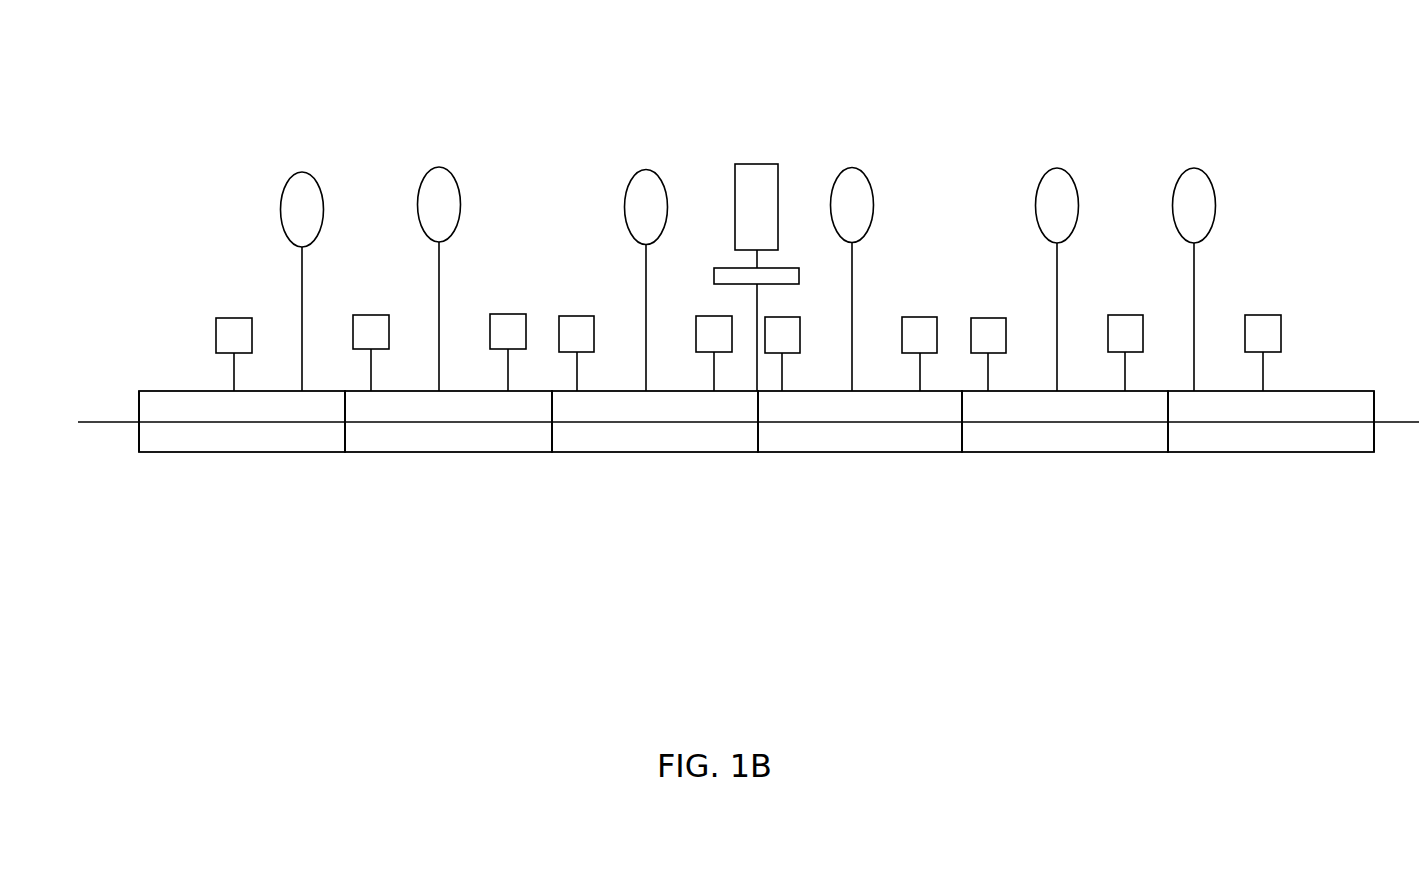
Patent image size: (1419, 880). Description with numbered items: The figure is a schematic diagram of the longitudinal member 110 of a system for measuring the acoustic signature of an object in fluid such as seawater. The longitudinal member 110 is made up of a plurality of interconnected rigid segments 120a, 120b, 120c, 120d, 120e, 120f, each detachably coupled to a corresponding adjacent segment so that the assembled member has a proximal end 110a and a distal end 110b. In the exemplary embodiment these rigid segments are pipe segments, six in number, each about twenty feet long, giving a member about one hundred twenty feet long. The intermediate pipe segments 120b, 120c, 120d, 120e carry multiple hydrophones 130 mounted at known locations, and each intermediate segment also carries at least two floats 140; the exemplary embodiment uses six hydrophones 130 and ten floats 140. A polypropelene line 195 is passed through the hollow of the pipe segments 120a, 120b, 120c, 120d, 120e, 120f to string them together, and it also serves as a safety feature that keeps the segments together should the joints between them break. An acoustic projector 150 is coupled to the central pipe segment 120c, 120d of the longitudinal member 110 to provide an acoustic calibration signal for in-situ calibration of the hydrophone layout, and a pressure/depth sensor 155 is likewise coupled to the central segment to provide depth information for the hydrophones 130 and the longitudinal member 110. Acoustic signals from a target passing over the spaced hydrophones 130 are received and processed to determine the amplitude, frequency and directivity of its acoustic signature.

The longitudinal member 110 is at (735, 484).
The proximal end 110a is at (139, 404).
The distal end 110b is at (1374, 405).
The rigid segment 120a is at (232, 453).
The rigid segment 120b is at (448, 455).
The rigid segment 120c is at (653, 457).
The rigid segment 120d is at (860, 455).
The rigid segment 120e is at (1092, 455).
The rigid segment 120f is at (1298, 455).
The hydrophone 130 is at (457, 168).
The float 140 is at (232, 317).
The acoustic projector 150 is at (778, 164).
The pressure/depth sensor 155 is at (716, 268).
The polypropelene line 195 is at (302, 422).